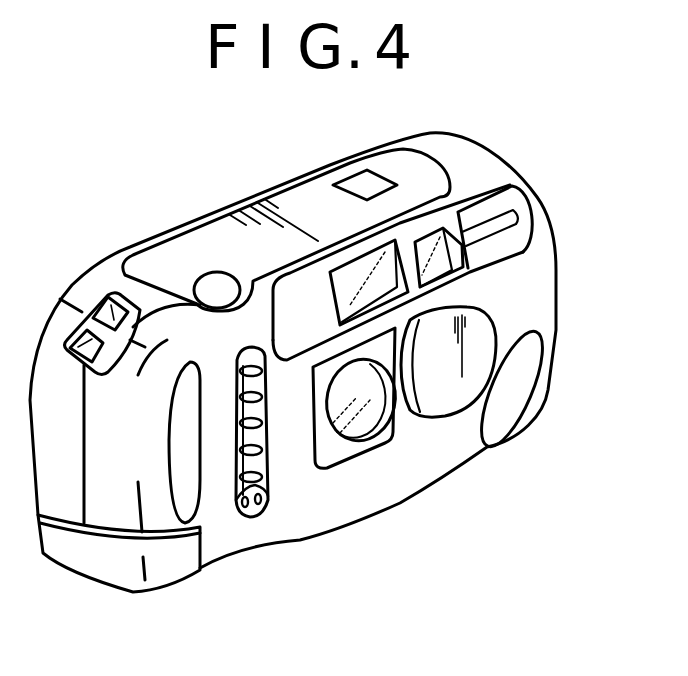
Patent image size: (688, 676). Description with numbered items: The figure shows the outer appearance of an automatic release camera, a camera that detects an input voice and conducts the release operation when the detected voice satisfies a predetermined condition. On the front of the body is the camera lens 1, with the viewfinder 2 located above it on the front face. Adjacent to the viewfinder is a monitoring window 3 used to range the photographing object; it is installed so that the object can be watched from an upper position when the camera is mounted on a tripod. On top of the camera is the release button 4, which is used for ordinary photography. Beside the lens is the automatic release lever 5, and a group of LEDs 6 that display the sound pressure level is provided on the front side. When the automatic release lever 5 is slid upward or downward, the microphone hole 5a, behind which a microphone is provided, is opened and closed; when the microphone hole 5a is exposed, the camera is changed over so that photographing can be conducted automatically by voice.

The camera lens 1 is at (352, 422).
The viewfinder 2 is at (367, 273).
The monitoring window 3 is at (428, 235).
The release button 4 is at (208, 280).
The automatic release lever 5 is at (270, 480).
The microphone hole 5a is at (249, 518).
The group of LEDs 6 is at (265, 395).